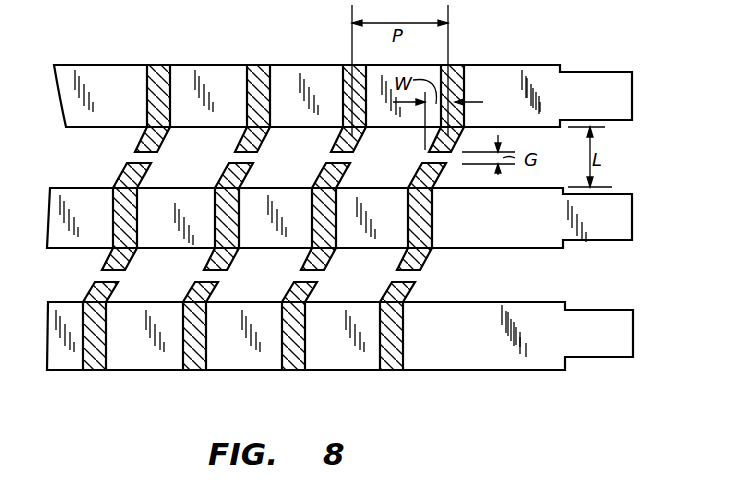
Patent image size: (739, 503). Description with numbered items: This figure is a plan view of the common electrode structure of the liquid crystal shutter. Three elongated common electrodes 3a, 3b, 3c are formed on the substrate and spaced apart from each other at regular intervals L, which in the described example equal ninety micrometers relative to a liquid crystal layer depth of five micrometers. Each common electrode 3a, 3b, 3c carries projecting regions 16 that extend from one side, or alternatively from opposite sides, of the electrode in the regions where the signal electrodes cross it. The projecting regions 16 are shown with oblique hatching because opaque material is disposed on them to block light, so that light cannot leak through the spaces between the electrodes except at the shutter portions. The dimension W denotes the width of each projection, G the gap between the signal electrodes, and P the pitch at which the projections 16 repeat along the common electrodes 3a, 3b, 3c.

The common electrode 3a is at (612, 62).
The common electrode 3b is at (613, 228).
The common electrode 3c is at (603, 347).
The projecting region 16 is at (418, 168).